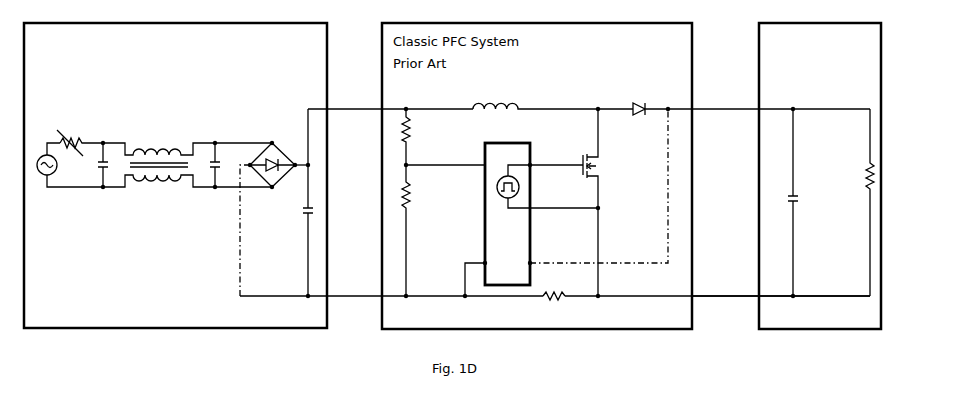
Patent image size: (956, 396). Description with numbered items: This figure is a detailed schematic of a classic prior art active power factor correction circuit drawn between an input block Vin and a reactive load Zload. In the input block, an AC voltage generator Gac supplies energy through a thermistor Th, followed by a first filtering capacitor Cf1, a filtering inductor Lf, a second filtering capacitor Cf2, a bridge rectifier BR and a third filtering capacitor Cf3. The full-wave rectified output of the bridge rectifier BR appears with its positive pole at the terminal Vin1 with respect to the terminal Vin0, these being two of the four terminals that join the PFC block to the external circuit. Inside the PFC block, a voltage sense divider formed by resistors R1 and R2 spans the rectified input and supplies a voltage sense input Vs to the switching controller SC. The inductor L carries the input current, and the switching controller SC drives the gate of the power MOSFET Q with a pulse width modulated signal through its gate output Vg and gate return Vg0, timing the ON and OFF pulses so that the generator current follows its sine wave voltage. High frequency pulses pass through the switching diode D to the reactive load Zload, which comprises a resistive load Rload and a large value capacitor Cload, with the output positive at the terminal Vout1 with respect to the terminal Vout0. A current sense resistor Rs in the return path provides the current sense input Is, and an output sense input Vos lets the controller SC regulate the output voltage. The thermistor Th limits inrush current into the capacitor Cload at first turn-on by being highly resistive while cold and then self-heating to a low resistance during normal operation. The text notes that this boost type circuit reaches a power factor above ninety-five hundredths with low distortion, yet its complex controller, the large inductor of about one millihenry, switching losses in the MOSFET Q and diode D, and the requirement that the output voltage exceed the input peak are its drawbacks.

The input voltage block Vin is at (175, 175).
The reactive load Zload is at (820, 176).
The AC voltage generator Gac is at (70, 178).
The thermistor Th is at (78, 134).
The first filtering capacitor Cf1 is at (110, 149).
The filtering inductor Lf is at (159, 158).
The second filtering capacitor Cf2 is at (207, 149).
The bridge rectifier BR is at (261, 204).
The third filtering capacitor Cf3 is at (289, 202).
The input return terminal Vin0 is at (555, 263).
The input terminal Vin1 is at (390, 98).
The voltage sense divider resistor R1 is at (419, 137).
The voltage sense divider resistor R2 is at (419, 230).
The inductor L is at (535, 97).
The voltage sense input Vs is at (445, 154).
The switching controller SC is at (507, 214).
The gate drive output Vg is at (556, 154).
The gate drive return Vg0 is at (564, 196).
The power MOSFET Q is at (602, 202).
The switching diode D is at (633, 100).
The output voltage sense input Vos is at (599, 186).
The current sense input Is is at (468, 268).
The current sense resistor Rs is at (554, 305).
The output terminal Vout1 is at (769, 97).
The output return terminal Vout0 is at (781, 265).
The load capacitor Cload is at (815, 202).
The resistive load Rload is at (847, 202).